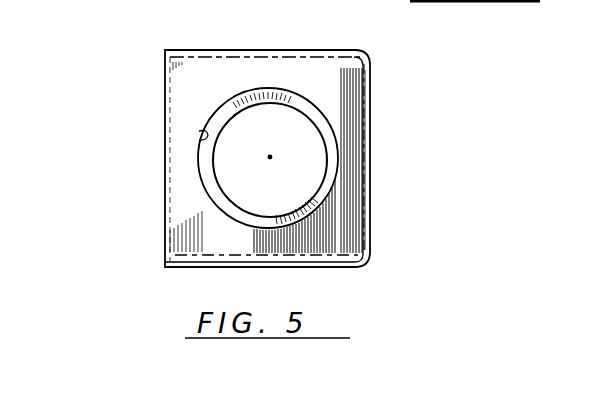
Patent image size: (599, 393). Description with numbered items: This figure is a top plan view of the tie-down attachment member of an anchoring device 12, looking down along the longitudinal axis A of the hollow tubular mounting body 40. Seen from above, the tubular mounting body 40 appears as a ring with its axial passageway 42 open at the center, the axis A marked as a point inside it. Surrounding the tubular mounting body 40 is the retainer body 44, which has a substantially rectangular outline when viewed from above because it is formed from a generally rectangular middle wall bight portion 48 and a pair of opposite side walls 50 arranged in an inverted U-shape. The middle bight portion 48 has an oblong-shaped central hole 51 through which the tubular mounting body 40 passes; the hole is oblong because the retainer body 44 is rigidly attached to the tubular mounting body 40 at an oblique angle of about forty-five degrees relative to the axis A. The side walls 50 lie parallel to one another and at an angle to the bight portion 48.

The anchoring device 12 is at (152, 75).
The tubular mounting body 40 is at (345, 133).
The axial passageway 42 is at (292, 157).
The retainer body 44 is at (371, 203).
The middle wall bight portion 48 is at (185, 183).
The side walls 50 is at (262, 50).
The oblong-shaped central hole 51 is at (197, 140).
The longitudinal axis A is at (270, 157).